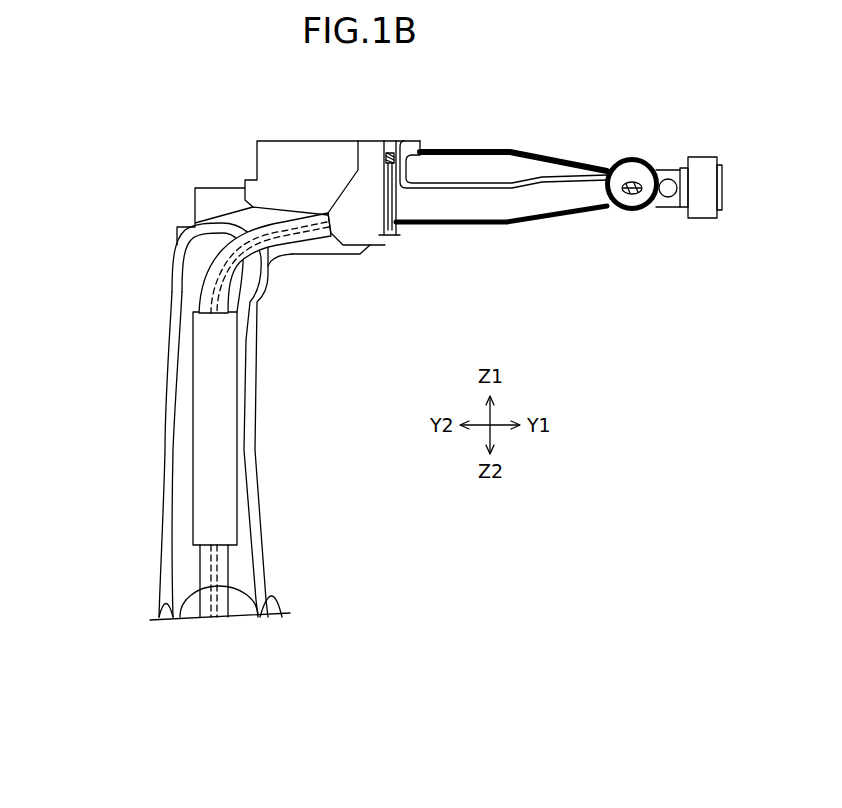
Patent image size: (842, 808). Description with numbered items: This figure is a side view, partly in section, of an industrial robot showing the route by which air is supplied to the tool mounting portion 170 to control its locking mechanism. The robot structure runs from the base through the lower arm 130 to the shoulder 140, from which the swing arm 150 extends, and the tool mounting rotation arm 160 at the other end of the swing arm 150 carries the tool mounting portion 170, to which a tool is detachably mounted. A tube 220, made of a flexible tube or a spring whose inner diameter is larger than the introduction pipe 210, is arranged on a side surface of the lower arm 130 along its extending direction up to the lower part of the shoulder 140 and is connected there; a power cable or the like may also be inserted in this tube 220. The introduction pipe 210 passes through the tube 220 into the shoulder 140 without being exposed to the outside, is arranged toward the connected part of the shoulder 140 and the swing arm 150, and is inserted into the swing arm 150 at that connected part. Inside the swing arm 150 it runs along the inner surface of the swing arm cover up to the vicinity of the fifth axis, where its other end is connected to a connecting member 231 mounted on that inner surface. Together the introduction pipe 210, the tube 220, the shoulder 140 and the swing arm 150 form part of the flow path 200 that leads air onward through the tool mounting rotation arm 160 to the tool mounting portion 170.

The lower arm 130 is at (167, 420).
The shoulder 140 is at (302, 141).
The swing arm 150 is at (490, 150).
The tool mounting rotation arm 160 is at (658, 208).
The tool mounting portion 170 is at (703, 165).
The flow path 200 is at (486, 197).
The introduction pipe 210 is at (357, 240).
The tube 220 is at (303, 213).
The connecting member 231 is at (632, 198).